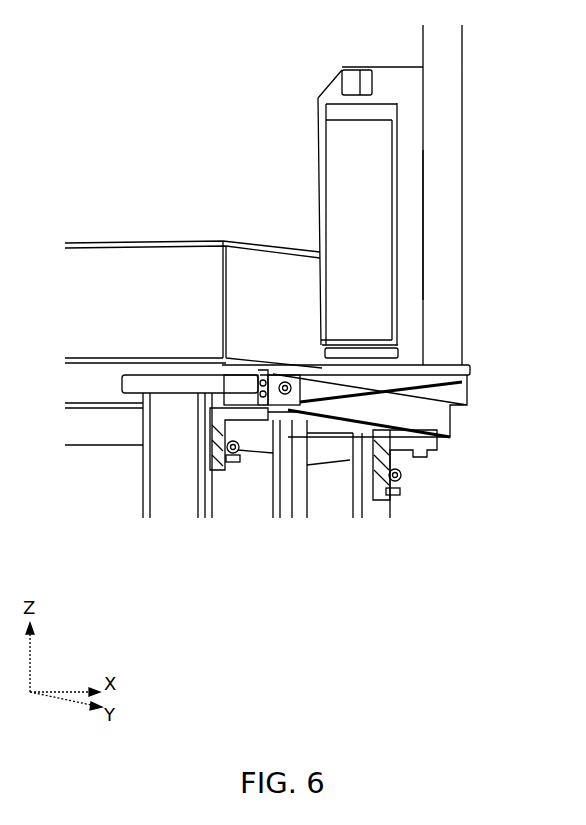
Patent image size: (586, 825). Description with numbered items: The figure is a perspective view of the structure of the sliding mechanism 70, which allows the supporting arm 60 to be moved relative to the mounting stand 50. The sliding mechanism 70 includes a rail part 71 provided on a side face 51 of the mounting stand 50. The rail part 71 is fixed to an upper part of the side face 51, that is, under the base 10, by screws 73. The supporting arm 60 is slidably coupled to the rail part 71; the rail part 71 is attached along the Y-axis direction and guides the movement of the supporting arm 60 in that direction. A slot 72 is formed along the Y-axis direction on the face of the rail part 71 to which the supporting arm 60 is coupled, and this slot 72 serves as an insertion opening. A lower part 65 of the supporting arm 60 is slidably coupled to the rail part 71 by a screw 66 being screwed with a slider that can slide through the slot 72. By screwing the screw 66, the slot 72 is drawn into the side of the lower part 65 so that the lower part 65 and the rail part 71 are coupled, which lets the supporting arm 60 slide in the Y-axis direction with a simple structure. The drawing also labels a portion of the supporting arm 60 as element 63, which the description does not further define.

The base 10 is at (148, 252).
The mounting stand 50 is at (157, 473).
The side face 51 is at (222, 492).
The supporting arm 60 is at (453, 217).
The column side face 63 is at (408, 320).
The lower part 65 is at (303, 366).
The screw 66 is at (273, 366).
The sliding mechanism 70 is at (213, 371).
The rail part 71 is at (340, 432).
The slot 72 is at (455, 410).
The screws 73 is at (235, 465).